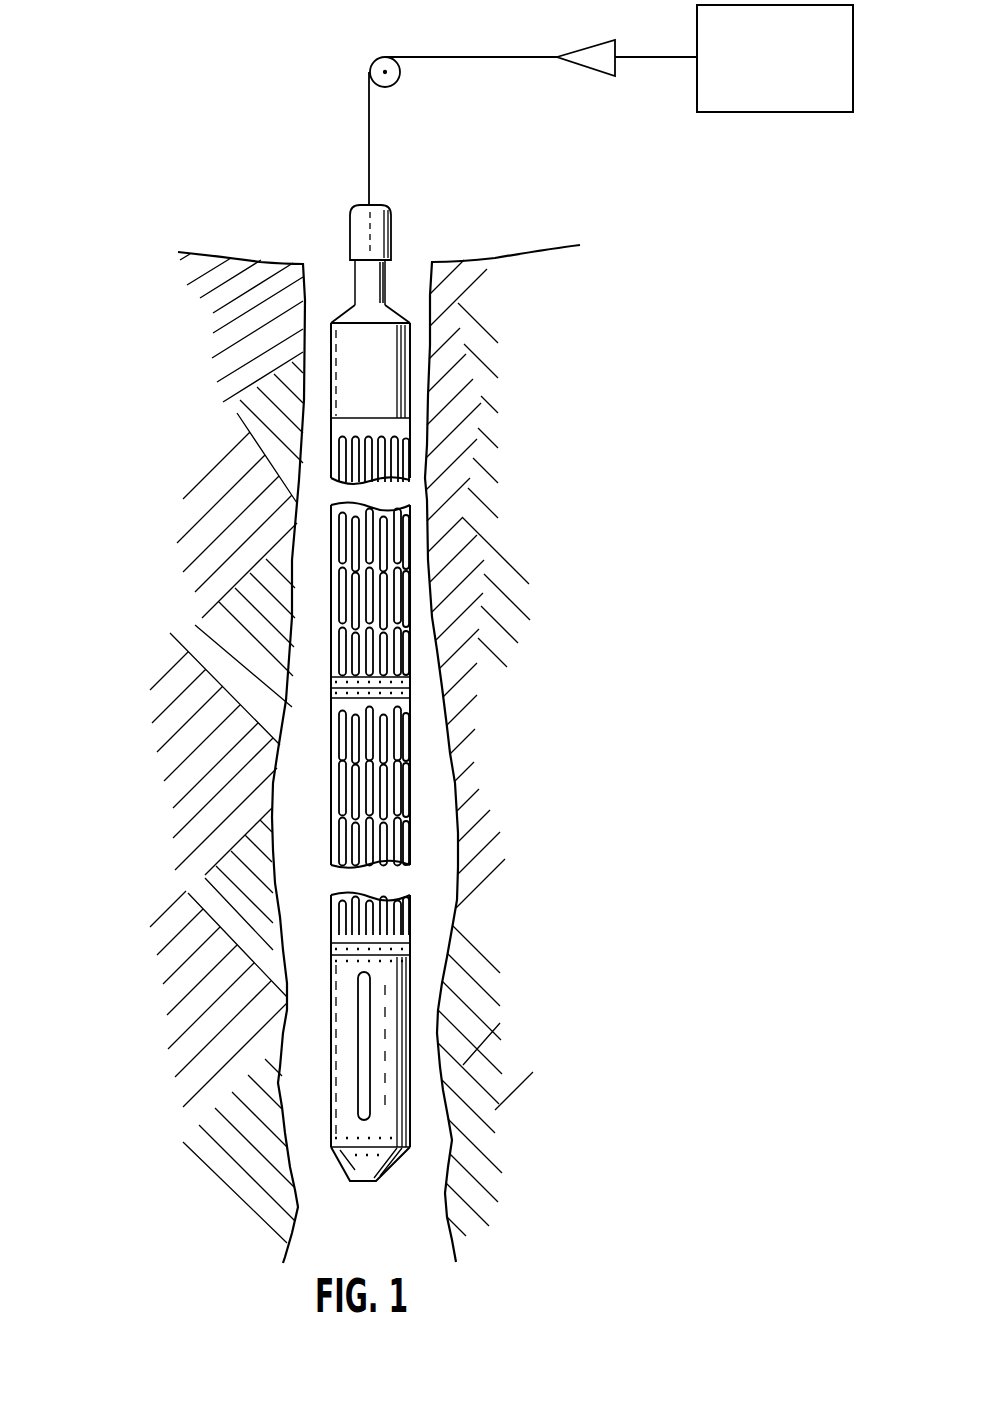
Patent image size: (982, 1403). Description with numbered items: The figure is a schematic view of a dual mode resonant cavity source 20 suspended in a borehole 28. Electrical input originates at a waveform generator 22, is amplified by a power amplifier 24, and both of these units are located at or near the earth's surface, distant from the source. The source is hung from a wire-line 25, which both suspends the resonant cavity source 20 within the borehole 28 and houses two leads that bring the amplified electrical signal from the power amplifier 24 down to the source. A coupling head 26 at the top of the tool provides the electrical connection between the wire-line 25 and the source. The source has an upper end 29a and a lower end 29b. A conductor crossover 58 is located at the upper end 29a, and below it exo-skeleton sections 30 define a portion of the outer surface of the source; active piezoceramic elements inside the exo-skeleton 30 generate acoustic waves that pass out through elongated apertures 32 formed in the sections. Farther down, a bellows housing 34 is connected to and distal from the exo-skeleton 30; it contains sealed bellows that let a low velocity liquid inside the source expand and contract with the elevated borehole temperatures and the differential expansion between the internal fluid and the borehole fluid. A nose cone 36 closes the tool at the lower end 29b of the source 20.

The dual mode resonant cavity source 20 is at (343, 674).
The waveform generator 22 is at (765, 112).
The power amplifier 24 is at (597, 77).
The wire-line 25 is at (522, 57).
The coupling head 26 is at (392, 215).
The borehole 28 is at (413, 302).
The upper end 29a is at (212, 362).
The lower end 29b is at (218, 1056).
The exo-skeleton section 30 is at (452, 660).
The elongated apertures 32 is at (392, 564).
The bellows housing 34 is at (410, 1017).
The nose cone 36 is at (400, 1163).
The conductor crossover 58 is at (395, 400).